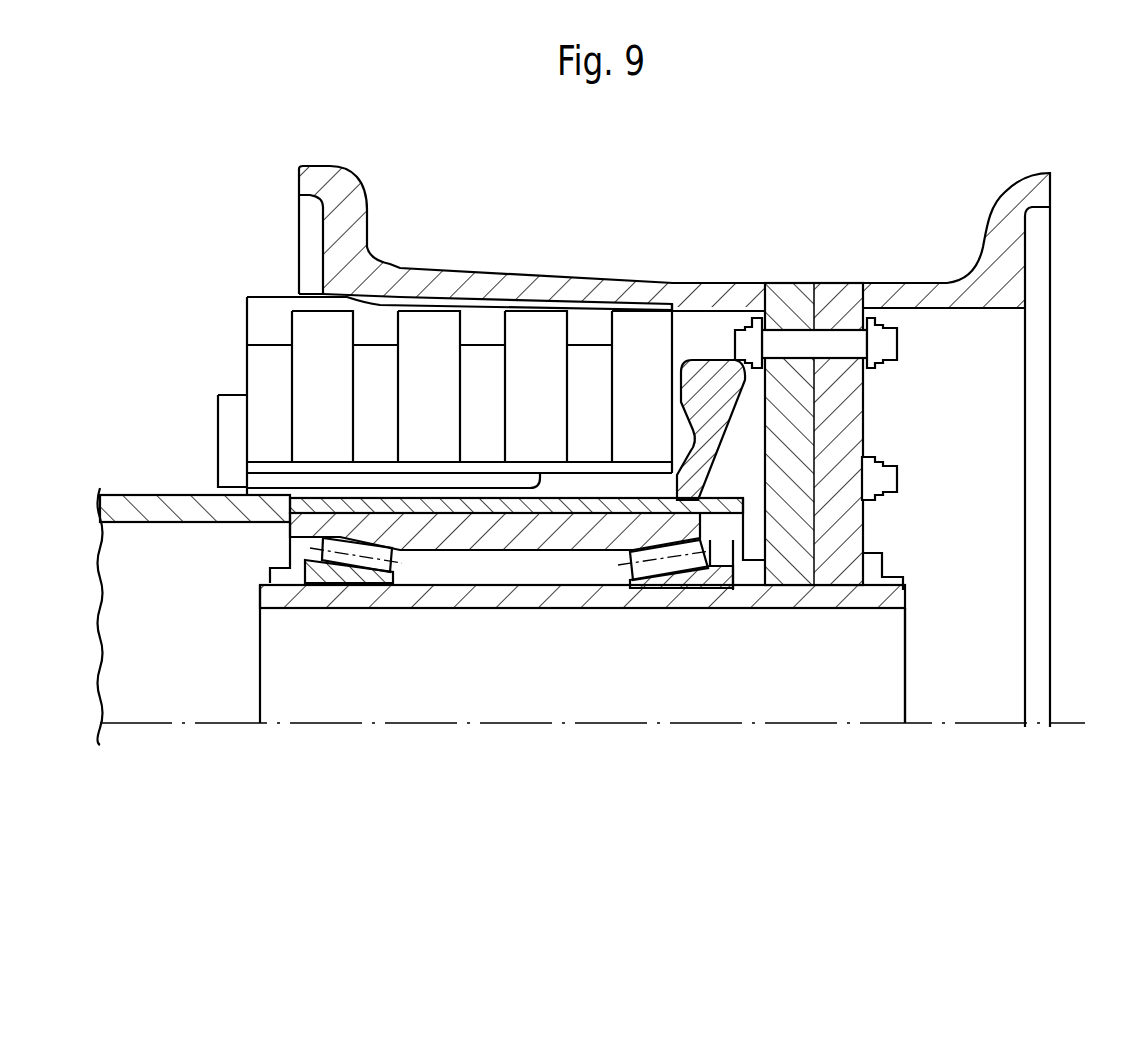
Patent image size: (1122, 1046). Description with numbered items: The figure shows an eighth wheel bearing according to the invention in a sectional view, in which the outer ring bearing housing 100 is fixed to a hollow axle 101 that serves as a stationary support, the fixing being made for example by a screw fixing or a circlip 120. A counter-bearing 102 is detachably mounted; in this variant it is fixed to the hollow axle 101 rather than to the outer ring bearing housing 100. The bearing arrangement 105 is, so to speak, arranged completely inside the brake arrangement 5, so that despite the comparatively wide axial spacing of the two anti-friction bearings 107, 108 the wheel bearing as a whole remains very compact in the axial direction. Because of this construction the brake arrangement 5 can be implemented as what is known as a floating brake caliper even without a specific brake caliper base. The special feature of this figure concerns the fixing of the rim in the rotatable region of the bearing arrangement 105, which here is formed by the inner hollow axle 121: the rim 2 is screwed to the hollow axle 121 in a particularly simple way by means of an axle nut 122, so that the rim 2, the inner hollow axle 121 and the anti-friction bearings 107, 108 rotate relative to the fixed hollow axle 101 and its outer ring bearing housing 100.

The rim 2 is at (556, 292).
The brake arrangement 5 is at (427, 335).
The outer ring bearing housing 100 is at (447, 535).
The hollow axle 101 is at (150, 512).
The counter-bearing 102 is at (697, 362).
The bearing arrangement 105 is at (528, 635).
The anti-friction bearing 107 is at (360, 567).
The anti-friction bearing 108 is at (657, 567).
The circlip 120 is at (908, 649).
The inner hollow axle 121 is at (838, 598).
The axle nut 122 is at (877, 577).